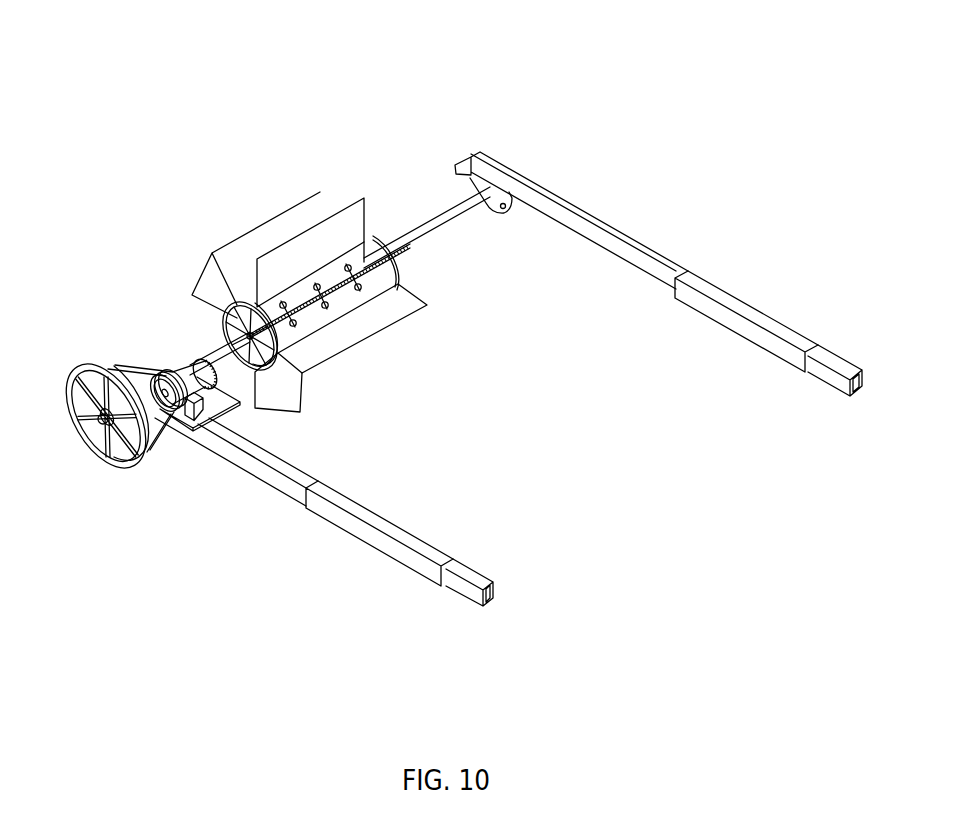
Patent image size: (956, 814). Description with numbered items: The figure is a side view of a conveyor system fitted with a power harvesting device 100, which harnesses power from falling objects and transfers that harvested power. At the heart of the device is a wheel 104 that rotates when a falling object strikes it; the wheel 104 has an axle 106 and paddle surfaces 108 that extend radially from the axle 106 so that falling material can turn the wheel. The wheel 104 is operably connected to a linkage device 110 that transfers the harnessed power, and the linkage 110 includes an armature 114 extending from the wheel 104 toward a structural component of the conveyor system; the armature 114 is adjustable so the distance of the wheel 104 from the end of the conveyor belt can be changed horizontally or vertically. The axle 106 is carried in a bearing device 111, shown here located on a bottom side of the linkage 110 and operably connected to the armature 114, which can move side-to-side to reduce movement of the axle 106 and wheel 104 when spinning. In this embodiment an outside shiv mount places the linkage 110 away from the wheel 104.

The power harvesting device 100 is at (456, 313).
The wheel 104 is at (380, 205).
The axle 106 is at (215, 352).
The paddle surface 108 is at (198, 287).
The linkage device 110 is at (600, 212).
The bearing device 111 is at (497, 213).
The armature 114 is at (628, 232).